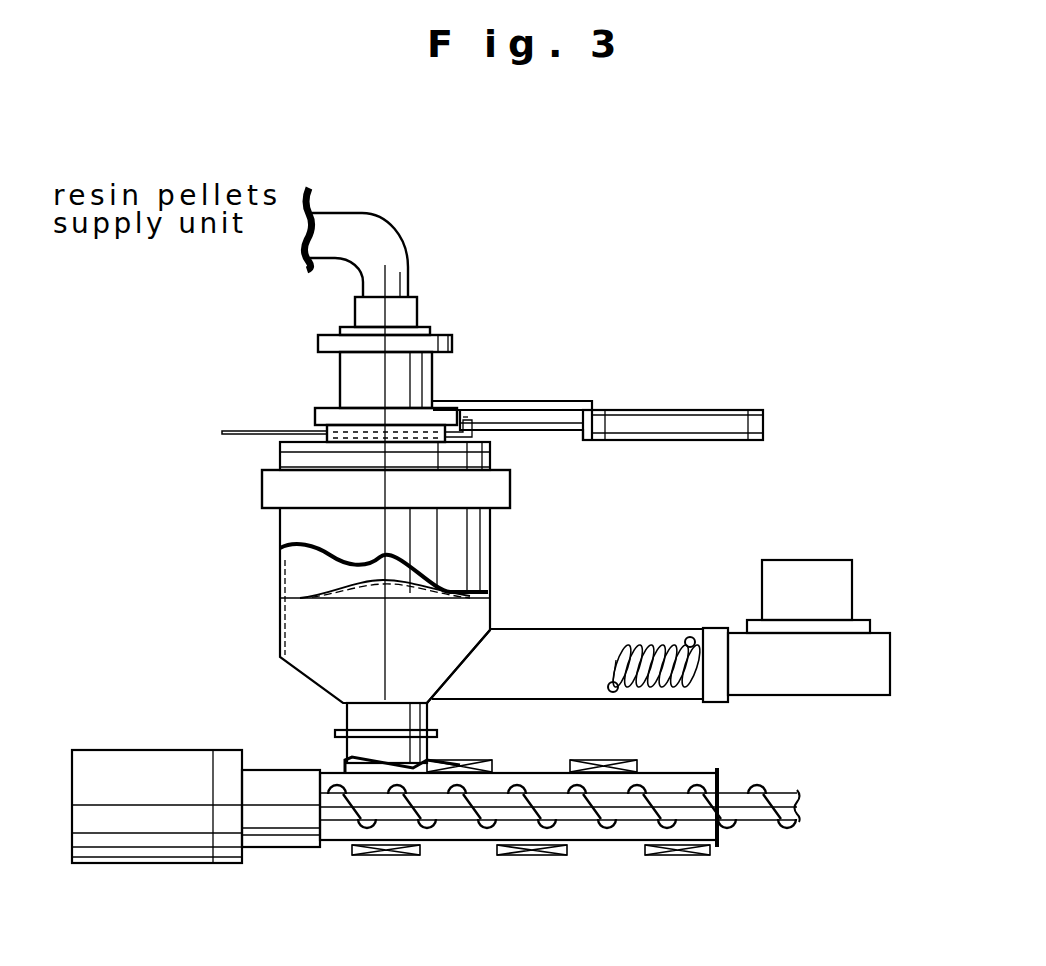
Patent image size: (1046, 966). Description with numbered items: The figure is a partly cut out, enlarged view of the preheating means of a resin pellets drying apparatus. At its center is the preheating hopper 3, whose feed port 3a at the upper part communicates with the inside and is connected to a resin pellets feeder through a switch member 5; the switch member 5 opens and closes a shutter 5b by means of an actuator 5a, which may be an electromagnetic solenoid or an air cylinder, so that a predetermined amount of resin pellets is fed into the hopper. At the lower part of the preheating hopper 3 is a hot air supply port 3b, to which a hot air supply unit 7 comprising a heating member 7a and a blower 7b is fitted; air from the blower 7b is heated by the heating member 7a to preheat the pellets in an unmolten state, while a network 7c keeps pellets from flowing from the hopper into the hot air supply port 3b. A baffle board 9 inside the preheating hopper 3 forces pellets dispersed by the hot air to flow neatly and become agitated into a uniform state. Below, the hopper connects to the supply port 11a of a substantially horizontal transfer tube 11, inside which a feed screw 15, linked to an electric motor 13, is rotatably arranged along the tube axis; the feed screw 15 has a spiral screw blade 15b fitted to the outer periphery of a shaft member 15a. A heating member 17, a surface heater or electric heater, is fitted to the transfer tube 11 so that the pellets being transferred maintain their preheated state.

The preheating hopper 3 is at (280, 558).
The feed port 3a is at (303, 461).
The hot air supply port 3b is at (527, 626).
The switch member 5 is at (530, 398).
The actuator 5a is at (675, 427).
The shutter 5b is at (248, 430).
The hot air supply unit 7 is at (717, 628).
The heating member 7a is at (635, 640).
The blower 7b is at (803, 653).
The network 7c is at (452, 675).
The baffle board 9 is at (385, 593).
The transfer tube 11 is at (457, 845).
The supply port 11a is at (353, 757).
The electric motor 13 is at (168, 842).
The feed screw 15 is at (578, 820).
The shaft member 15a is at (710, 847).
The screw blade 15b is at (757, 790).
The heating member 17 is at (570, 760).